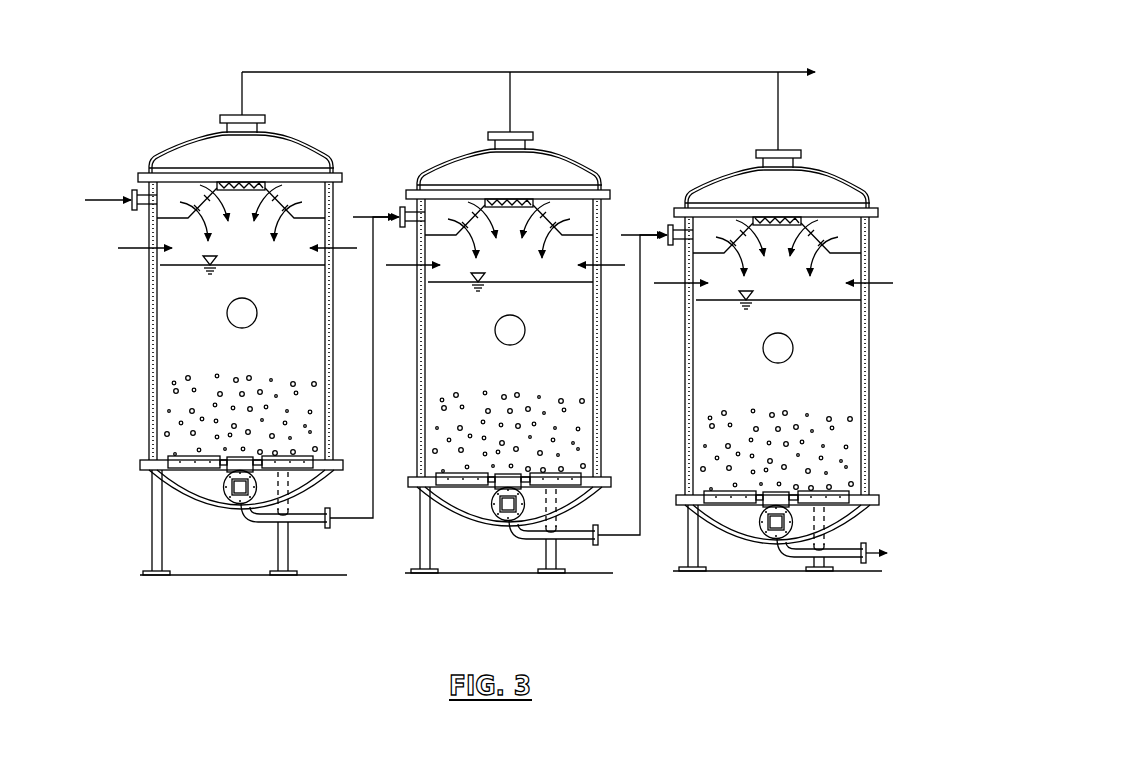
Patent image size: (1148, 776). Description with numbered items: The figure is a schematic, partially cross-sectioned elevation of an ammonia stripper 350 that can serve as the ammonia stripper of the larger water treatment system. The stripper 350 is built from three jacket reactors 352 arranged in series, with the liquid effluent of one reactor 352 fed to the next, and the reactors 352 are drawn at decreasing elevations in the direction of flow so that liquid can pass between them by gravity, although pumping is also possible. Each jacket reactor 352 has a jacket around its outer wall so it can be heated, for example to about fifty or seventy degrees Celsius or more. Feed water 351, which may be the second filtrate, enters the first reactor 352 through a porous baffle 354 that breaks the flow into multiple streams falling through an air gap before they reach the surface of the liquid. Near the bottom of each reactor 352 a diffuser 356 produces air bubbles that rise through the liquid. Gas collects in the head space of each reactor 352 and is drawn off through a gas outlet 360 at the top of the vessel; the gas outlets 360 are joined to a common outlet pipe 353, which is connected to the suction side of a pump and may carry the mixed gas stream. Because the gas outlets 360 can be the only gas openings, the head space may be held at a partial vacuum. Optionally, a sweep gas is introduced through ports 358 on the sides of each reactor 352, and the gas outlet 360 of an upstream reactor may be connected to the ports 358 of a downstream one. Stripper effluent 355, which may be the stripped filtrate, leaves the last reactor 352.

The ammonia stripper 350 is at (176, 587).
The feed water 351 is at (101, 196).
The jacket reactor 352 is at (149, 425).
The outlet pipe 353 is at (787, 70).
The porous baffle 354 is at (280, 190).
The stripper effluent 355 is at (873, 560).
The diffuser 356 is at (310, 455).
The ports 358 is at (133, 247).
The gas outlet 360 is at (258, 115).